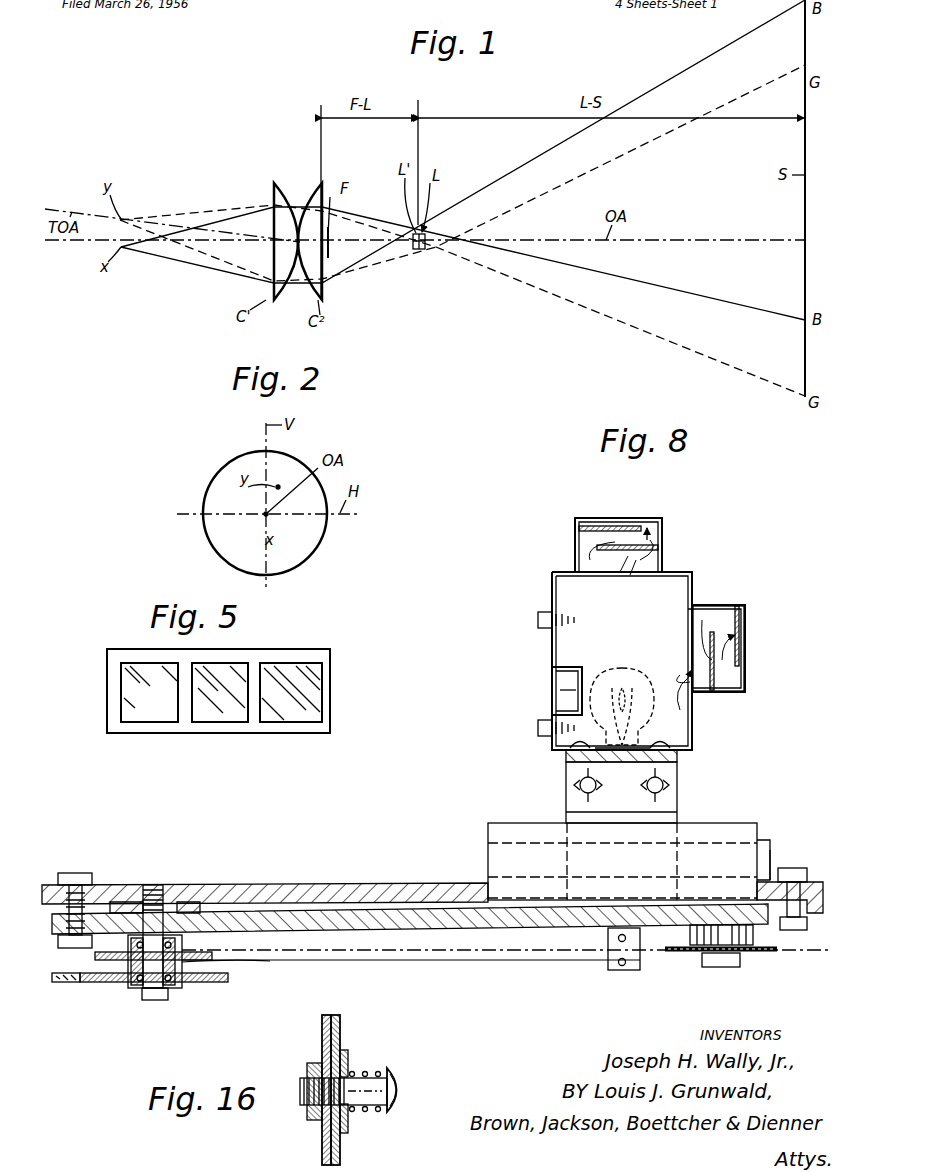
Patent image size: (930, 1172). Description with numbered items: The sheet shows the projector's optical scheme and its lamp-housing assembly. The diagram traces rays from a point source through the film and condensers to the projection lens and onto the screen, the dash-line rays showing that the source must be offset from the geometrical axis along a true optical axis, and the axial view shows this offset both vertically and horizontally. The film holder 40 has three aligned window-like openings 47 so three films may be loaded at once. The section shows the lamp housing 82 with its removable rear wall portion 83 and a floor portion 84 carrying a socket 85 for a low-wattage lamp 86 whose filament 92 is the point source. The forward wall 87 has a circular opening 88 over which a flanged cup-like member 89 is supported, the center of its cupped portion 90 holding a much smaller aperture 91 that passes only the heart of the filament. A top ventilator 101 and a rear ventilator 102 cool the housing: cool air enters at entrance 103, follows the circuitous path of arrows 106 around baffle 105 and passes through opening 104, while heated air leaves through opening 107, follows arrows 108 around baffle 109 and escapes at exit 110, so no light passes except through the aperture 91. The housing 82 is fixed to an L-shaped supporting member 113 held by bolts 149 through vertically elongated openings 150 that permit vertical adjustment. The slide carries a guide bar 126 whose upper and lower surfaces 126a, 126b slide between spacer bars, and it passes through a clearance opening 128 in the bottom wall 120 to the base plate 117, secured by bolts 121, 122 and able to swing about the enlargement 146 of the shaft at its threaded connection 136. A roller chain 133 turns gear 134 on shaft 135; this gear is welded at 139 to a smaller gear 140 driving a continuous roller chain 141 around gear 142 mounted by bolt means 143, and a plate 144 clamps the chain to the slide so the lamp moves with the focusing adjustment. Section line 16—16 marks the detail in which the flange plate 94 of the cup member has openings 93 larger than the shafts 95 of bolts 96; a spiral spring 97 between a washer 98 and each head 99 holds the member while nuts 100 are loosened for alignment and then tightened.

In FIG. 5, the film holder 40 is at (291, 735).
In FIG. 5, the window-like openings 47 is at (308, 680).
In FIG. 8, the lamp housing 82 is at (548, 580).
In FIG. 8, the removable rear wall portion 83 is at (694, 588).
In FIG. 8, the floor portion 84 is at (560, 750).
In FIG. 8, the socket 85 is at (640, 746).
In FIG. 8, the lamp 86 is at (624, 668).
In FIG. 8, the forward wall 87 is at (552, 640).
In FIG. 16, the forward wall 87 is at (322, 1032).
In FIG. 8, the opening 88 is at (552, 686).
In FIG. 8, the flanged cup-like member 89 is at (566, 668).
In FIG. 8, the cupped portion 90 is at (606, 700).
In FIG. 8, the aperture 91 is at (574, 698).
In FIG. 8, the filament 92 is at (626, 690).
In FIG. 8, the section line 16— 16 is at (540, 618).
In FIG. 8, the top ventilator 101 is at (594, 522).
In FIG. 8, the rear ventilator 102 is at (745, 635).
In FIG. 8, the entrance 103 is at (745, 648).
In FIG. 8, the opening 104 is at (690, 700).
In FIG. 8, the baffle 105 is at (735, 688).
In FIG. 8, the arrows 106 is at (712, 608).
In FIG. 8, the opening 107 is at (652, 578).
In FIG. 8, the arrows 108 is at (580, 535).
In FIG. 8, the baffle 109 is at (660, 545).
In FIG. 8, the exit 110 is at (650, 520).
In FIG. 8, the L-shaped supporting member 113 is at (680, 757).
In FIG. 8, the bolts 149 is at (650, 787).
In FIG. 8, the elongated openings 150 is at (582, 790).
In FIG. 8, the guide bar 126 is at (515, 848).
In FIG. 8, the upper surface 126a is at (763, 835).
In FIG. 8, the lower surface 126b is at (775, 860).
In FIG. 8, the clearance opening 128 is at (486, 888).
In FIG. 8, the bottom wall 120 is at (246, 885).
In FIG. 8, the enlargement 146 is at (192, 893).
In FIG. 8, the bolt 121 is at (88, 875).
In FIG. 8, the bolt 122 is at (796, 868).
In FIG. 8, the threaded connection 136 is at (156, 885).
In FIG. 8, the shaft 135 is at (155, 1000).
In FIG. 8, the gear 134 is at (103, 982).
In FIG. 8, the roller chain 133 is at (65, 982).
In FIG. 8, the gear 140 is at (190, 950).
In FIG. 8, the weld 139 is at (232, 962).
In FIG. 8, the base plate 117 is at (458, 960).
In FIG. 8, the continuous roller chain 141 is at (530, 958).
In FIG. 8, the plate 144 is at (612, 962).
In FIG. 8, the bolt means 143 is at (712, 967).
In FIG. 8, the gear 142 is at (760, 955).
In FIG. 16, the flange plate 94 is at (341, 1030).
In FIG. 16, the openings 93 is at (346, 1052).
In FIG. 16, the bolts 96 is at (402, 1068).
In FIG. 16, the head 99 is at (402, 1091).
In FIG. 16, the shaft 95 is at (397, 1104).
In FIG. 16, the spiral spring 97 is at (366, 1112).
In FIG. 16, the washer 98 is at (346, 1130).
In FIG. 16, the nuts 100 is at (307, 1110).